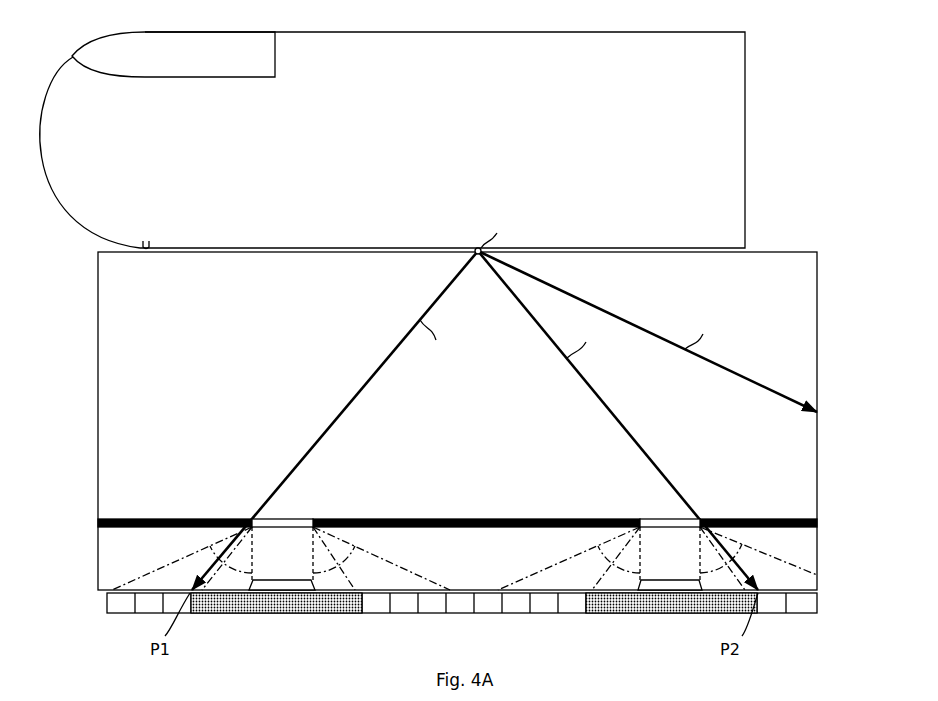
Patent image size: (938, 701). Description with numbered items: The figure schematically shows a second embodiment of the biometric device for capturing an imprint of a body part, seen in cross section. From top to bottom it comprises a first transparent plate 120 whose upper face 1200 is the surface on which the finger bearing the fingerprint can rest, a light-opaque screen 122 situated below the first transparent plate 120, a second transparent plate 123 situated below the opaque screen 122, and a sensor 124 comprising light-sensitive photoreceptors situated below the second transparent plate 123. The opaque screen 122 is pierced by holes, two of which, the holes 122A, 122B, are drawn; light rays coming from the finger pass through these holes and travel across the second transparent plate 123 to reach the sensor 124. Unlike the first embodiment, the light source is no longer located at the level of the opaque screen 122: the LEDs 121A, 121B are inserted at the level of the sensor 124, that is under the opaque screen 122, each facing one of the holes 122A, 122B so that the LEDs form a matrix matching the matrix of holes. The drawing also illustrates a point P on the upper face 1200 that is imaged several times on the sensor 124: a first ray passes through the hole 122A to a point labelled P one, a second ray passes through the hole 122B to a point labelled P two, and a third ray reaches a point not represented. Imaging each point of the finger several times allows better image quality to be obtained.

The upper face 1200 is at (795, 253).
The first transparent plate 120 is at (90, 252).
The light-opaque screen 122 is at (90, 518).
The hole of the opaque screen 122A is at (313, 507).
The hole of the opaque screen 122B is at (708, 507).
The second transparent plate 123 is at (90, 537).
The sensor 124 is at (90, 594).
The LED 121A is at (278, 593).
The LED 121B is at (668, 593).